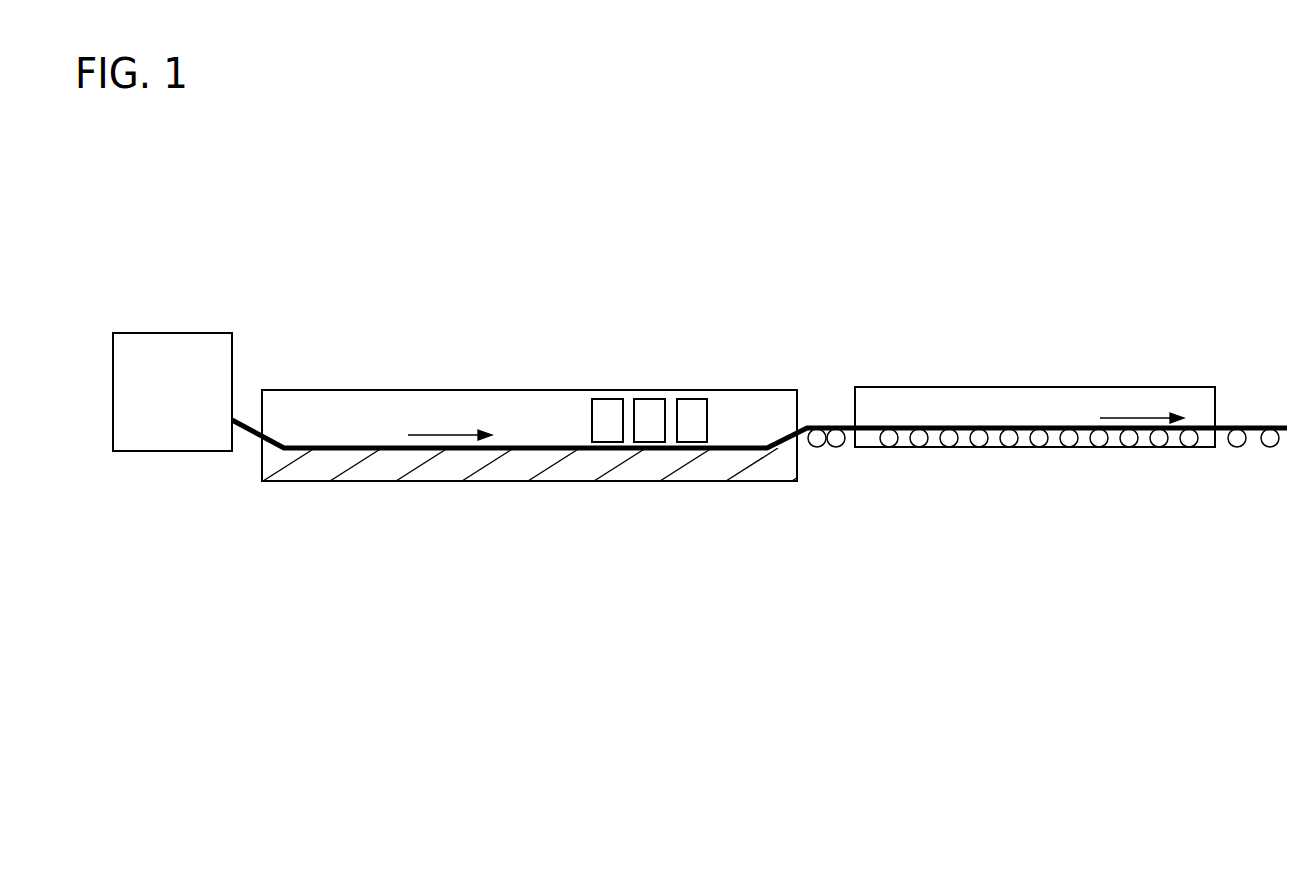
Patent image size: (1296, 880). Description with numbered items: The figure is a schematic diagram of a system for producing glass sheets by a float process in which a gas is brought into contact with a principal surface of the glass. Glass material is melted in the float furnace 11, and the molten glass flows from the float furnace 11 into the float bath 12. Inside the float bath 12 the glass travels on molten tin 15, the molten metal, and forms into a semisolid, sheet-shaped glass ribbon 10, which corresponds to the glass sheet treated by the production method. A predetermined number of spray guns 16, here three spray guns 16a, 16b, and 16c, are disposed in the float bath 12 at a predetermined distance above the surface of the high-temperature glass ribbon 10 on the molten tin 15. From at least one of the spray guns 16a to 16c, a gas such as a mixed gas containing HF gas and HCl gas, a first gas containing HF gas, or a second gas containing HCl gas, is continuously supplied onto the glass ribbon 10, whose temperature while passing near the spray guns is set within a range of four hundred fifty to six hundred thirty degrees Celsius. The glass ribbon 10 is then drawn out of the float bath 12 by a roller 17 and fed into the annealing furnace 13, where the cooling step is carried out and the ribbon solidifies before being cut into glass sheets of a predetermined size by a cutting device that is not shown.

The glass ribbon 10 is at (545, 445).
The float furnace 11 is at (182, 430).
The float bath 12 is at (410, 408).
The annealing furnace 13 is at (1030, 407).
The molten tin 15 is at (368, 467).
The spray guns 16 is at (641, 491).
The spray gun 16a is at (605, 432).
The spray gun 16b is at (648, 432).
The spray gun 16c is at (687, 473).
The roller 17 is at (818, 444).